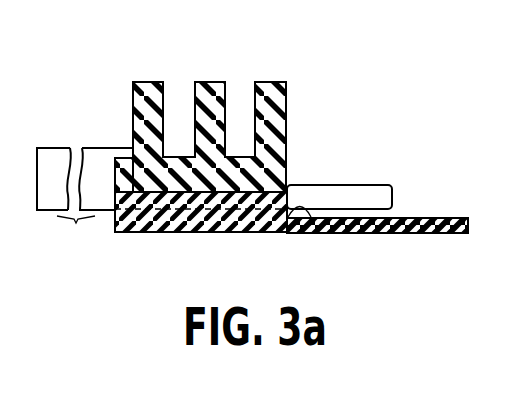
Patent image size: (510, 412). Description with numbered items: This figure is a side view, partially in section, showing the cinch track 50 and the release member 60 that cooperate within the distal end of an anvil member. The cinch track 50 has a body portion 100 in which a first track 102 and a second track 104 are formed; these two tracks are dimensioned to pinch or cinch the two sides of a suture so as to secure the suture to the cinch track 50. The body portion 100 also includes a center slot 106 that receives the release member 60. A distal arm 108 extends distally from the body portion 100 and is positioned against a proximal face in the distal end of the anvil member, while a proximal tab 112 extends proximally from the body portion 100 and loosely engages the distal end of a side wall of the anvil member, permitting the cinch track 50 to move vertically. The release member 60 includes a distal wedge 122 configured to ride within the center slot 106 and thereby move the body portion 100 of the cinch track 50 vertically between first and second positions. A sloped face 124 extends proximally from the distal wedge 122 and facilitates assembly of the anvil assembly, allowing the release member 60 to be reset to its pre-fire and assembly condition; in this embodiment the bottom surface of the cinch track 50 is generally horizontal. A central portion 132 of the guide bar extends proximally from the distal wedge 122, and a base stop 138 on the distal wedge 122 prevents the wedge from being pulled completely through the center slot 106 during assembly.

The cinch track 50 is at (100, 143).
The release member 60 is at (448, 220).
The body portion 100 is at (290, 124).
The first track 102 is at (240, 107).
The second track 104 is at (180, 113).
The center slot 106 is at (288, 188).
The distal arm 108 is at (40, 200).
The proximal tab 112 is at (367, 200).
The distal wedge 122 is at (172, 222).
The sloped face 124 is at (303, 216).
The central portion 132 is at (388, 235).
The base stop 138 is at (110, 188).